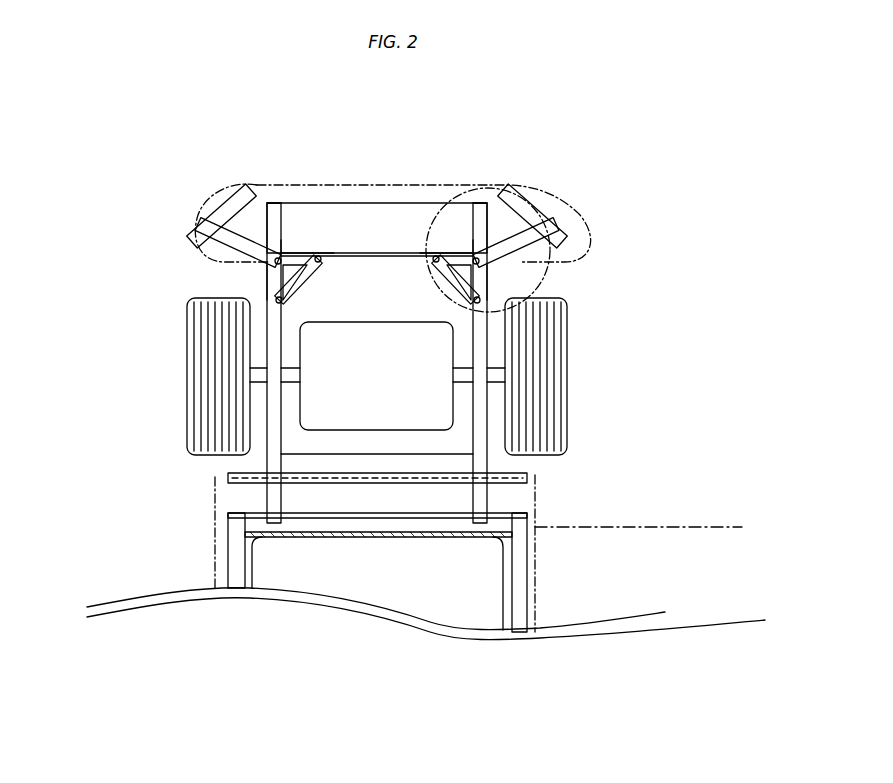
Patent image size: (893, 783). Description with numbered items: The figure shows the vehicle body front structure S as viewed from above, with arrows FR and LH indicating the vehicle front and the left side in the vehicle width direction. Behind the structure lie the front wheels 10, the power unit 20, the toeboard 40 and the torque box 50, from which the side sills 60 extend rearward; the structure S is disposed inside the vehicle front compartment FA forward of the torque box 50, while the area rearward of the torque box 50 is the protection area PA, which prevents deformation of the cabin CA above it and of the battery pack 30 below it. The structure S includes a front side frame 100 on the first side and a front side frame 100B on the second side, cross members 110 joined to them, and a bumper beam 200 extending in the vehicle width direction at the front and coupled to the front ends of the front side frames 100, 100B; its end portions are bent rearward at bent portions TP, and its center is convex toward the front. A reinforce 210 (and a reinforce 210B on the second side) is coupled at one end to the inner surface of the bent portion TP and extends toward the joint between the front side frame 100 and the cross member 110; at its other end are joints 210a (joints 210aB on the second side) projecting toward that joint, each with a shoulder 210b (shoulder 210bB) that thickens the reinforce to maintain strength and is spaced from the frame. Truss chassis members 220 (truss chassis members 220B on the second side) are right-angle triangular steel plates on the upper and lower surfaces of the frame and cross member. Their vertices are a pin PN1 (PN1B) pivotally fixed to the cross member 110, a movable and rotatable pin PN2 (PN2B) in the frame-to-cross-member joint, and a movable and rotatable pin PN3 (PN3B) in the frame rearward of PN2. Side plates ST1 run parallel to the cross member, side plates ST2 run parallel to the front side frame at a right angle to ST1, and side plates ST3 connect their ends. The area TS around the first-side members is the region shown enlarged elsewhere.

The front wheels 10 is at (197, 357).
The power unit 20 is at (314, 377).
The battery pack 30 is at (366, 570).
The toeboard 40 is at (250, 477).
The torque box 50 is at (262, 520).
The side sills 60 is at (240, 552).
The front side frame 100 is at (478, 200).
The front side frame 100B is at (275, 202).
The cross members 110 is at (403, 250).
The bumper beam 200 is at (370, 200).
The reinforce 210 is at (567, 223).
The joints 210a is at (562, 238).
The shoulder 210b is at (568, 230).
The reinforce 210B is at (172, 198).
The joints 210aB is at (200, 243).
The shoulder 210bB is at (256, 196).
The truss chassis members 220 is at (425, 247).
The truss chassis members 220B is at (325, 200).
The side plates ST1 is at (309, 239).
The side plates ST2 is at (268, 286).
The side plates ST3 is at (293, 288).
The pin PN1 is at (436, 264).
The pin PN1B is at (323, 253).
The pin PN2 is at (481, 262).
The pin PN2B is at (273, 262).
The pin PN3 is at (481, 300).
The pin PN3B is at (284, 302).
The bent portions TP is at (214, 187).
The area TS is at (566, 172).
The vehicle body front structure S is at (714, 140).
The vehicle front compartment FA is at (730, 527).
The protection area PA is at (730, 527).
The cabin CA is at (554, 575).
The vehicle front direction FR is at (88, 722).
The vehicle left-hand direction LH is at (88, 722).